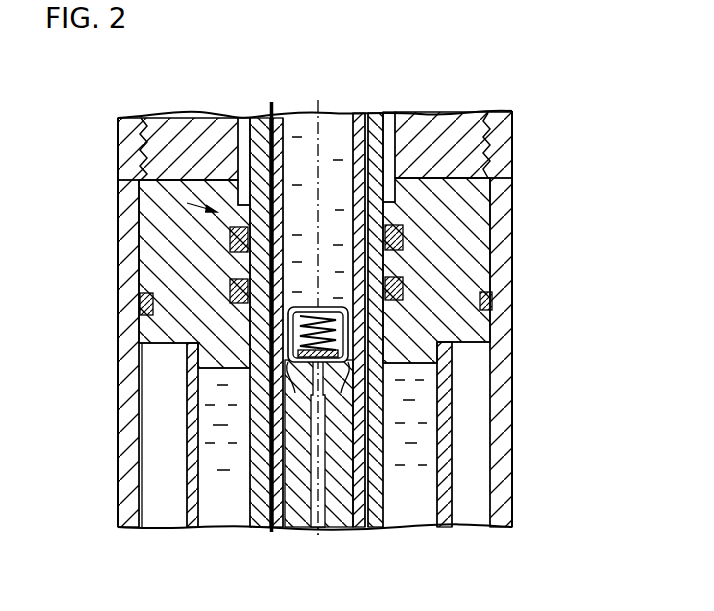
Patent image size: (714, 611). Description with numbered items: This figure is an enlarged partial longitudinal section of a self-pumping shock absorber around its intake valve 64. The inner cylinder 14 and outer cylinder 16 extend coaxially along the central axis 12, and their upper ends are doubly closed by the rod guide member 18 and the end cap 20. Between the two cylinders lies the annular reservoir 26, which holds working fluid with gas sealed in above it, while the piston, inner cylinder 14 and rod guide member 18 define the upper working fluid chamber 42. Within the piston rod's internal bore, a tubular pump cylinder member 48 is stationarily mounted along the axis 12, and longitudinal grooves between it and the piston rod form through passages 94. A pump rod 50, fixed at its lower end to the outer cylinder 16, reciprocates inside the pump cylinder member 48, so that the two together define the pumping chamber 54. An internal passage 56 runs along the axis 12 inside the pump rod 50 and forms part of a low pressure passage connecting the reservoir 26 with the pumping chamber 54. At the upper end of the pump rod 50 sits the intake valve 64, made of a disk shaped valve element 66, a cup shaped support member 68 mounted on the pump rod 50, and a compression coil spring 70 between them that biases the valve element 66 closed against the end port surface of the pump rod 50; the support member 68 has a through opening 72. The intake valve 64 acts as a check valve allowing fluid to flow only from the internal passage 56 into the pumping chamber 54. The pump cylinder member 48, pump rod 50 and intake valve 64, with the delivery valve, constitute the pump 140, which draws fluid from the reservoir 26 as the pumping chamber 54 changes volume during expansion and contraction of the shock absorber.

The central axis 12 is at (317, 101).
The inner cylinder 14 is at (184, 514).
The outer cylinder 16 is at (126, 476).
The rod guide member 18 is at (162, 282).
The end cap 20 is at (163, 148).
The annular reservoir 26 is at (480, 493).
The upper working fluid chamber 42 is at (222, 515).
The pump cylinder member 48 is at (360, 136).
The pump rod 50 is at (293, 513).
The pumping chamber 54 is at (337, 143).
The internal passage 56 is at (326, 513).
The intake valve 64 is at (346, 317).
The valve element 66 is at (370, 387).
The support member 68 is at (289, 316).
The compression coil spring 70 is at (370, 342).
The through opening 72 is at (289, 308).
The through passages 94 is at (271, 118).
The pump 140 is at (135, 200).